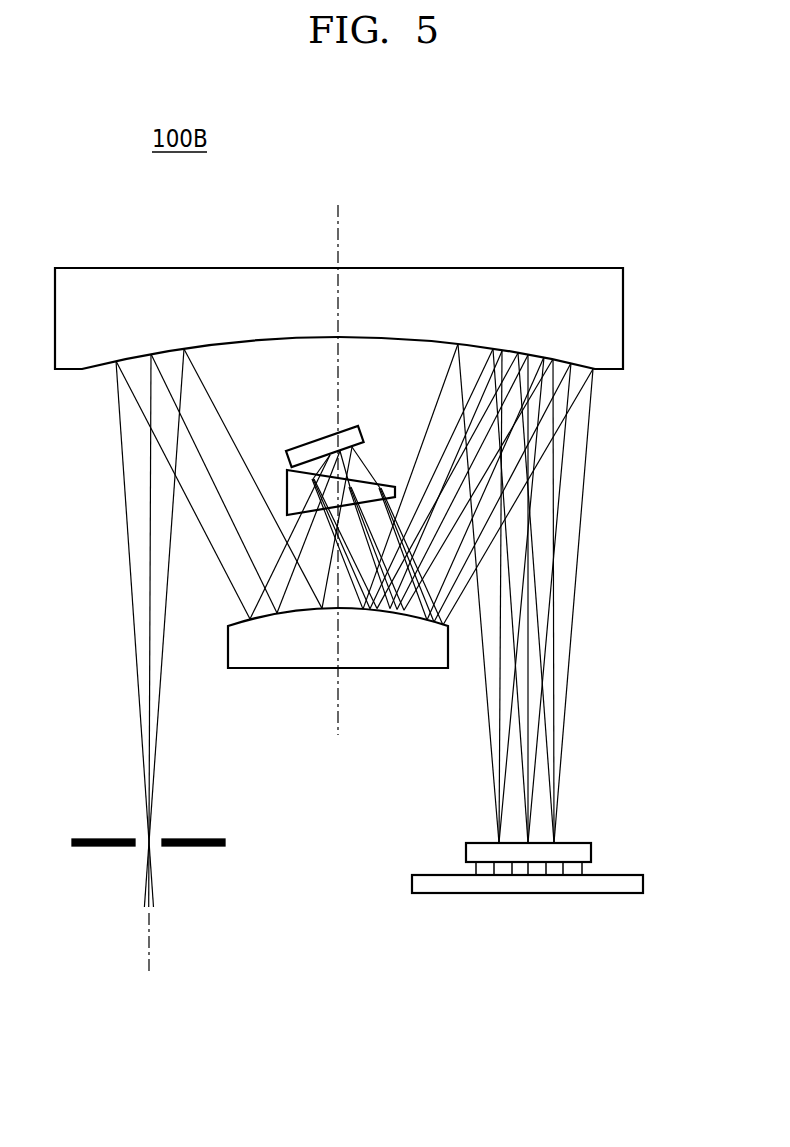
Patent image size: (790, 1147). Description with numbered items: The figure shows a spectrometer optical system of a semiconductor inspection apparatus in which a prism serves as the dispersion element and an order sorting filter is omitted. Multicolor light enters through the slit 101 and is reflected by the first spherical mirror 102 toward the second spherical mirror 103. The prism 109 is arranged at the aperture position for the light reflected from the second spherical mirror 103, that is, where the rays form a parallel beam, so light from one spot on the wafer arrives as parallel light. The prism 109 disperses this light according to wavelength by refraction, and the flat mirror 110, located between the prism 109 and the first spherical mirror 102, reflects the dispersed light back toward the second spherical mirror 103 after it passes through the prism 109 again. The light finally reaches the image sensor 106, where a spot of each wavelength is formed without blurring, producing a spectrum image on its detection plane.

The slit 101 is at (148, 815).
The first spherical mirror 102 is at (339, 293).
The second spherical mirror 103 is at (338, 667).
The image sensor 106 is at (551, 850).
The prism 109 is at (317, 481).
The flat mirror 110 is at (323, 425).